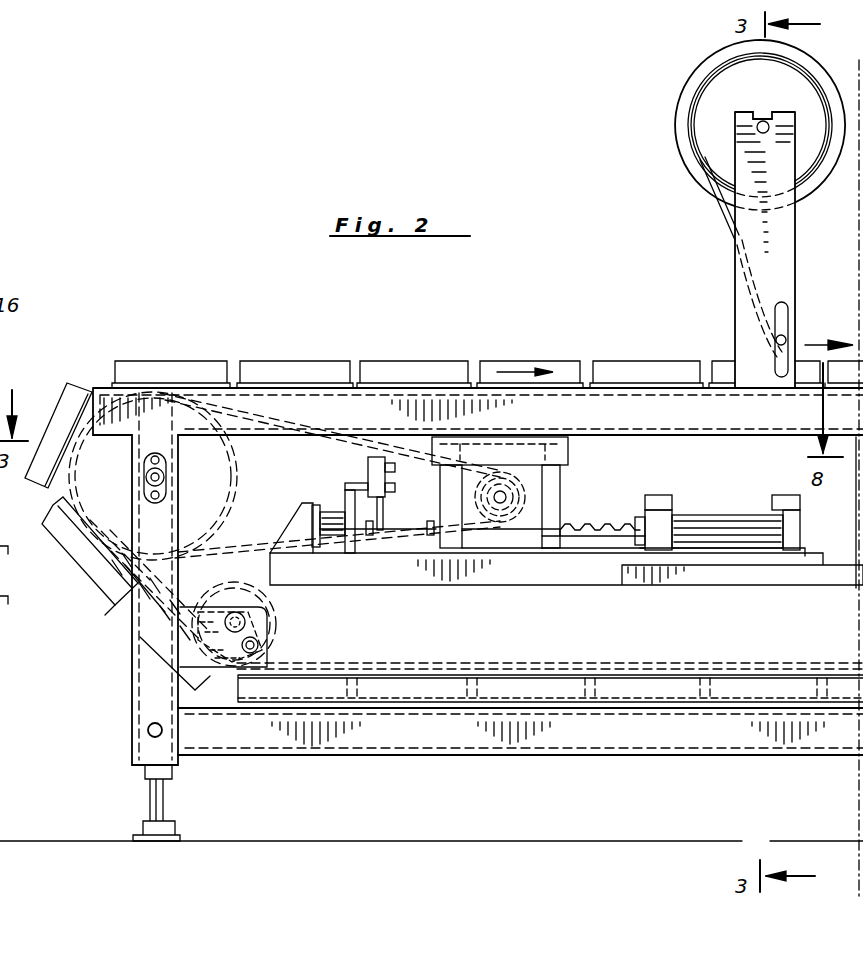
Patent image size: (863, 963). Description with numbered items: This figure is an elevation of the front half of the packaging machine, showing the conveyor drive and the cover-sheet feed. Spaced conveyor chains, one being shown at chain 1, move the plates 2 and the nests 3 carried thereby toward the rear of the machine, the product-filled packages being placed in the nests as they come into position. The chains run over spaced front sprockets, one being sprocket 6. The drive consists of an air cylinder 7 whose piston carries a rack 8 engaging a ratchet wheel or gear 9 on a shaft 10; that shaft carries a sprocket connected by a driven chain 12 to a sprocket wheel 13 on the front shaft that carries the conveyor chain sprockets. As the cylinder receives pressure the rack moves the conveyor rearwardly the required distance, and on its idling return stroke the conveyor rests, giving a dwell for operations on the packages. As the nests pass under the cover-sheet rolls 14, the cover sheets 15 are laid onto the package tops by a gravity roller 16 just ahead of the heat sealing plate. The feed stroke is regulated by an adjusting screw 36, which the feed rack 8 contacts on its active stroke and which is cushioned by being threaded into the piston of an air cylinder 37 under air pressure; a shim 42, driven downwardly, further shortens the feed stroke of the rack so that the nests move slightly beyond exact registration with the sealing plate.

The conveyor chain 1 is at (170, 478).
The plates 2 is at (485, 663).
The nests 3 is at (403, 383).
The front sprocket 6 is at (270, 630).
The air cylinder 7 is at (705, 515).
The piston-carried rack 8 is at (600, 536).
The ratchet wheel 9 is at (443, 497).
The shaft 10 is at (506, 497).
The driven chain 12 is at (280, 417).
The sprocket wheel 13 is at (238, 494).
The cover-sheet rolls 14 is at (678, 120).
The cover sheets 15 is at (727, 233).
The gravity roller 16 is at (790, 333).
The adjusting screw 36 is at (360, 532).
The air cylinder 37 is at (330, 512).
The shim 42 is at (440, 522).